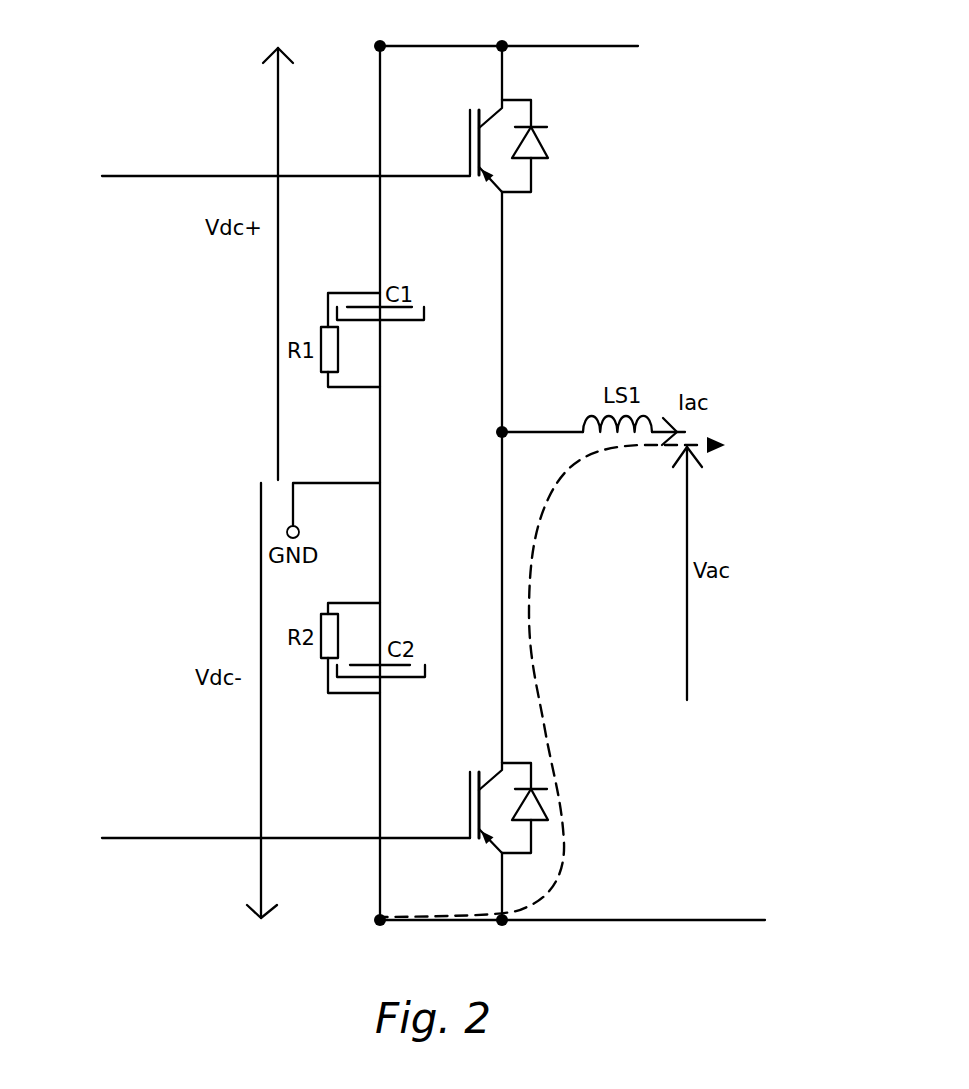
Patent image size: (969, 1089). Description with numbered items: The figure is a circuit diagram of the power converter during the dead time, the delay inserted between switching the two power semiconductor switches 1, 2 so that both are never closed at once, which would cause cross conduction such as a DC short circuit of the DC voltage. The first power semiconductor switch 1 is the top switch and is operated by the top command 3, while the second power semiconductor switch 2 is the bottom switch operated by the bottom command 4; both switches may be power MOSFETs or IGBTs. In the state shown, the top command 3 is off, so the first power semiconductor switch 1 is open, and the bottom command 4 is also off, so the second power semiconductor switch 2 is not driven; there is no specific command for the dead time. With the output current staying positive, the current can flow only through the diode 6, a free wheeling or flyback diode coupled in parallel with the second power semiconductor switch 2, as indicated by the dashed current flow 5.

The first power semiconductor switch 1 is at (588, 137).
The second power semiconductor switch 2 is at (569, 817).
The top command 3 is at (157, 176).
The bottom command 4 is at (160, 838).
The current flow 5 is at (532, 642).
The diode 6 is at (540, 803).